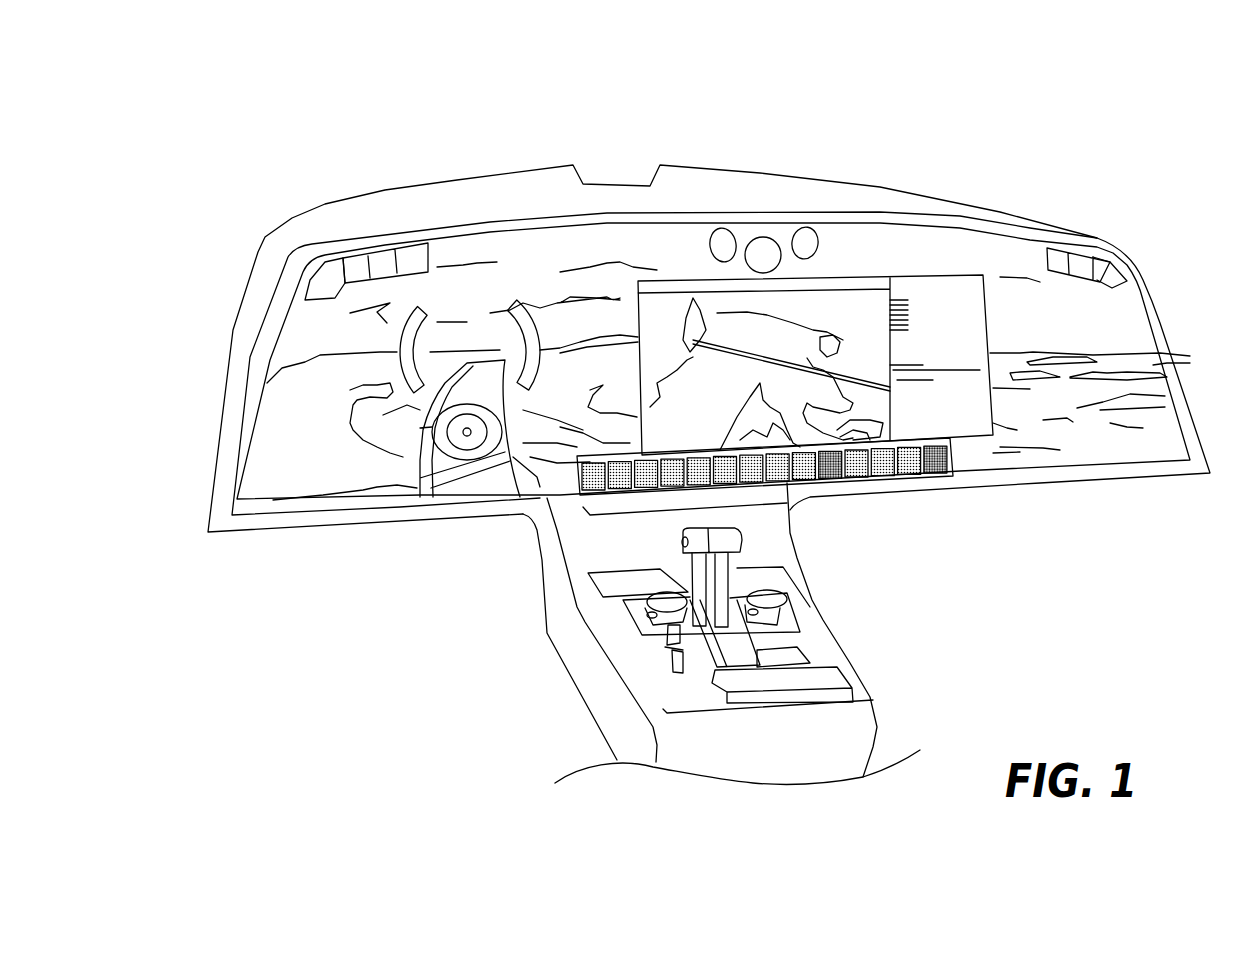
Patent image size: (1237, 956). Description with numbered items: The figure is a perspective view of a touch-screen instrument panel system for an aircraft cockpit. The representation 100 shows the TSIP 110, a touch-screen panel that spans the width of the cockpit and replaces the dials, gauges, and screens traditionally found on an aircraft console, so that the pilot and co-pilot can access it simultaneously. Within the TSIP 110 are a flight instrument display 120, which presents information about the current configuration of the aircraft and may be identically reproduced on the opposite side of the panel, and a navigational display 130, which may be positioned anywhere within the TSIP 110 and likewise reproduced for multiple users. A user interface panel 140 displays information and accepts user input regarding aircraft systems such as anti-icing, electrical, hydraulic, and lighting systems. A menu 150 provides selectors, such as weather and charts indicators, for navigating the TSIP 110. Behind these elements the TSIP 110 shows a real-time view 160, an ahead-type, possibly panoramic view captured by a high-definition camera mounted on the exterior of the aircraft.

The representation 100 is at (1036, 103).
The TSIP 110 is at (1160, 323).
The flight instrument display 120 is at (761, 236).
The navigational display 130 is at (395, 351).
The user interface panel 140 is at (973, 438).
The menu 150 is at (850, 502).
The real-time view 160 is at (1123, 423).